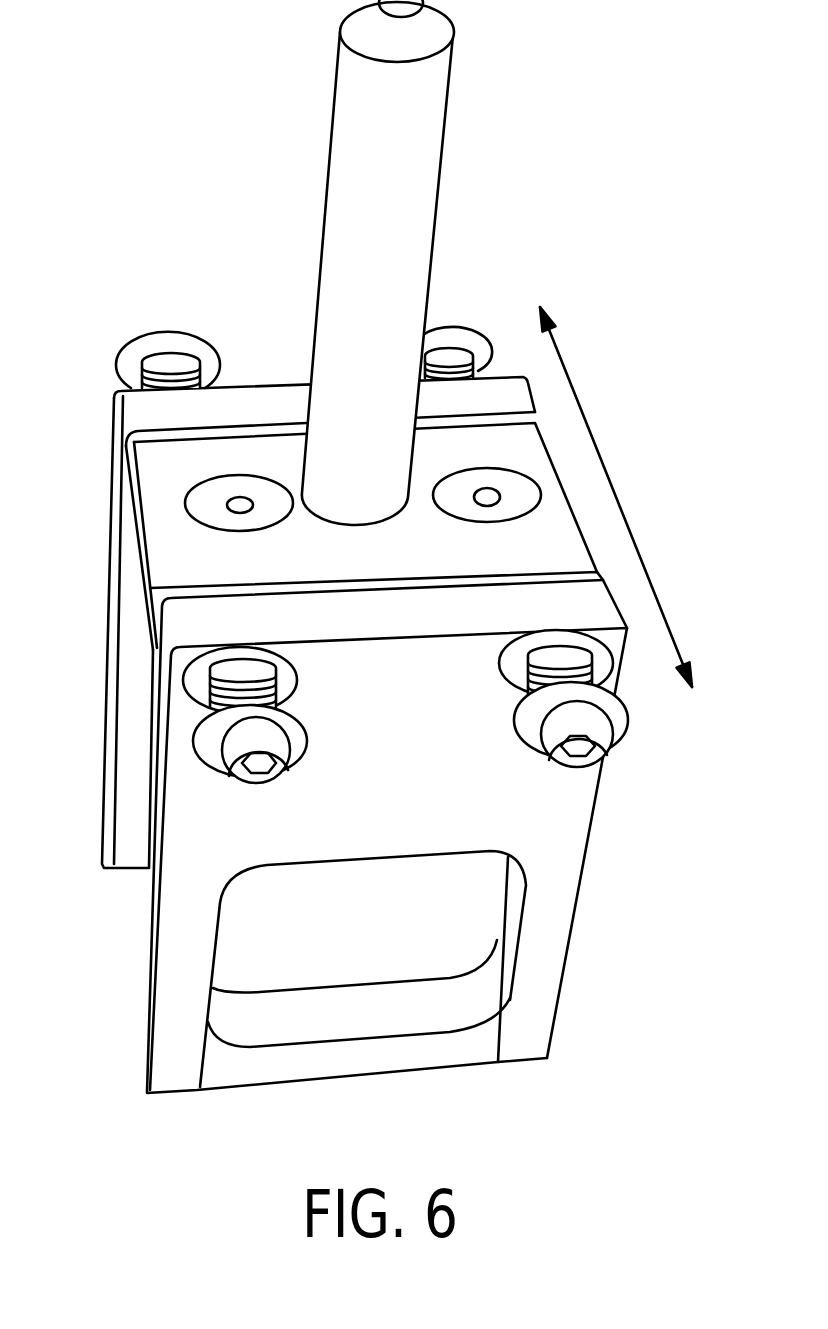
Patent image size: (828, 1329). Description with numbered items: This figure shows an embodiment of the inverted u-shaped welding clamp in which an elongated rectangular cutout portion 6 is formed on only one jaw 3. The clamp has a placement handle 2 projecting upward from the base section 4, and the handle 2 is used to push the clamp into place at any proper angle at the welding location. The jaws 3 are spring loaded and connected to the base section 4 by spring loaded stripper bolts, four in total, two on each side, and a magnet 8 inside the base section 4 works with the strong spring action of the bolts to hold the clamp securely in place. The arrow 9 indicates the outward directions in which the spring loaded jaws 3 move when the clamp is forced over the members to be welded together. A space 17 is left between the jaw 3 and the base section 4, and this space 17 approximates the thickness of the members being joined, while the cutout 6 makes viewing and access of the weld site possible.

The placement handle 2 is at (423, 146).
The jaw 3 is at (108, 636).
The base section 4 is at (151, 495).
The elongated cutout 6 is at (418, 878).
The magnet 8 is at (240, 523).
The arrow 9 is at (617, 498).
The space 17 is at (215, 430).